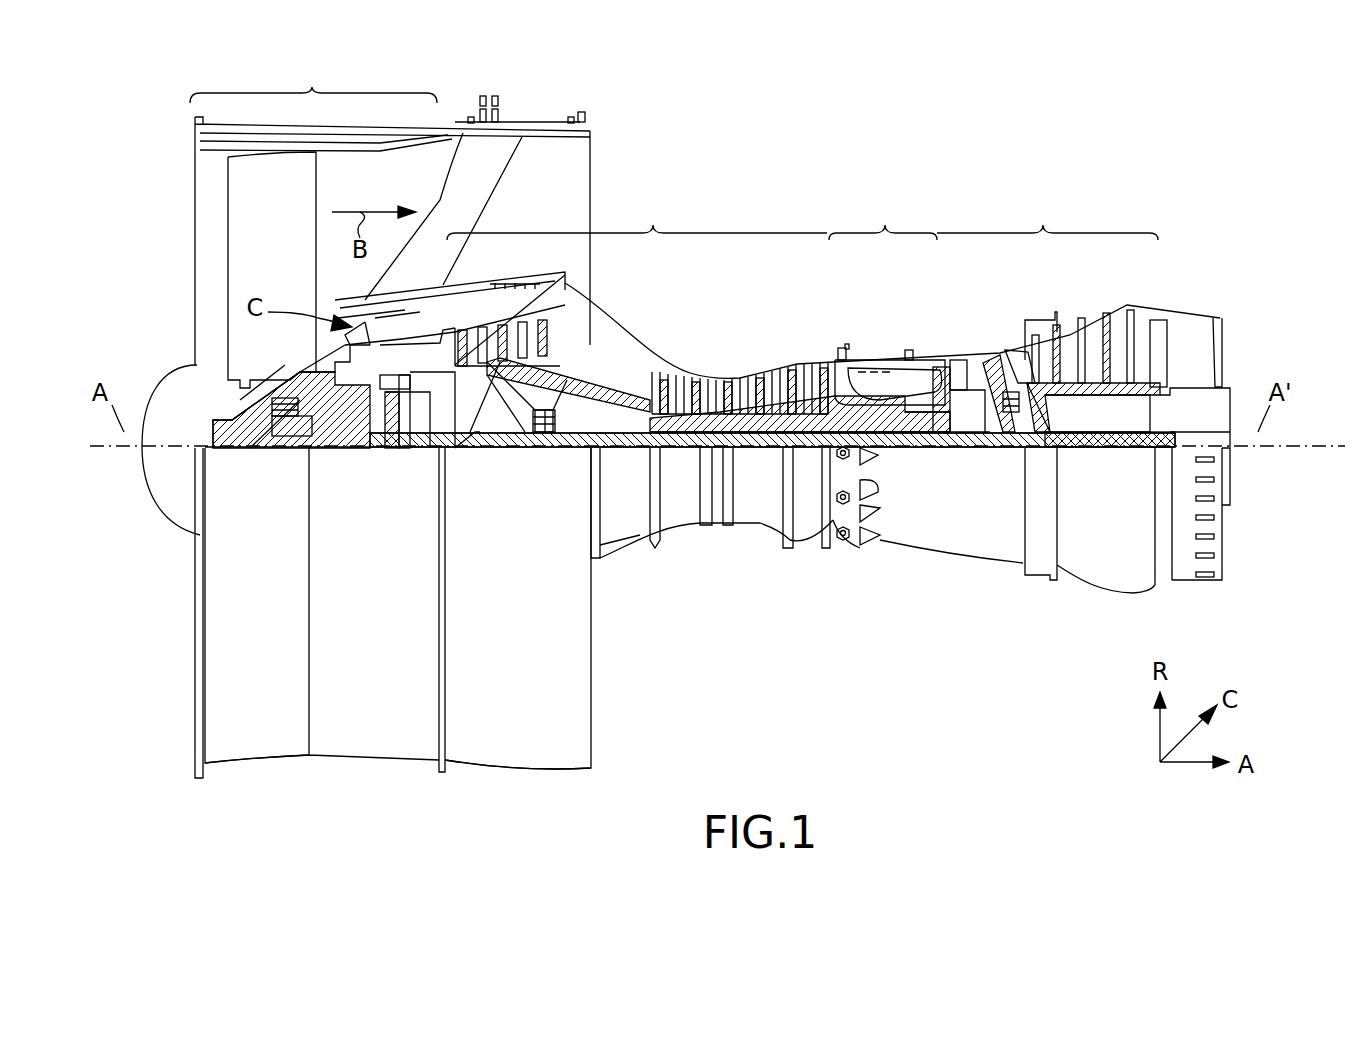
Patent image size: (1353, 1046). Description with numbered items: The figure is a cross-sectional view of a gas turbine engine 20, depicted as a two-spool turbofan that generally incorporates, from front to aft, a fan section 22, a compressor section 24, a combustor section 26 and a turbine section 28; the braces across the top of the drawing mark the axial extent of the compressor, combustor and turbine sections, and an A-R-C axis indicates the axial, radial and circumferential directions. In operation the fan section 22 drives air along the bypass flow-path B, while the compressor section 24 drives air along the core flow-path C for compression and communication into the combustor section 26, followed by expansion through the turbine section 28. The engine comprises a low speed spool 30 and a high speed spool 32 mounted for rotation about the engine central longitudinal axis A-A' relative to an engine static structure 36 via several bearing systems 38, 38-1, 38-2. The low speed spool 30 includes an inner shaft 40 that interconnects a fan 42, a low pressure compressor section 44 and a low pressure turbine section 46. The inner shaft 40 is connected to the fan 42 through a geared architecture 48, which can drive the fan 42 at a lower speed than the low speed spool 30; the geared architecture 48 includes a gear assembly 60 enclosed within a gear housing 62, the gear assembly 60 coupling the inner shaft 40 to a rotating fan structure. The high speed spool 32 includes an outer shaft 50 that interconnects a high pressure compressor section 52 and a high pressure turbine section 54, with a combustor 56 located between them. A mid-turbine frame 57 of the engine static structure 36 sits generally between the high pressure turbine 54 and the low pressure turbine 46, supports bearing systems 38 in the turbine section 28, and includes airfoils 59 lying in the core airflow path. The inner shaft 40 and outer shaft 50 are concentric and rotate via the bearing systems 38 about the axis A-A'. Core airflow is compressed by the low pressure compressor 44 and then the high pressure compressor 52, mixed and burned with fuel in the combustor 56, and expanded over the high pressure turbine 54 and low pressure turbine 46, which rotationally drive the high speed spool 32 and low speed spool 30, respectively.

The gas turbine engine 20 is at (938, 152).
The fan section 22 is at (387, 179).
The compressor section 24 is at (637, 217).
The combustor section 26 is at (883, 217).
The turbine section 28 is at (1047, 217).
The low speed spool 30 is at (766, 468).
The high speed spool 32 is at (805, 412).
The engine static structure 36 is at (372, 740).
The bearing system 38 is at (1000, 437).
The bearing system 38-1 is at (290, 436).
The bearing system 38-2 is at (541, 438).
The inner shaft 40 is at (615, 448).
The fan 42 is at (272, 270).
The low pressure compressor section 44 is at (520, 345).
The low pressure turbine section 46 is at (1093, 330).
The geared architecture 48 is at (403, 462).
The outer shaft 50 is at (878, 430).
The high pressure compressor section 52 is at (740, 412).
The high pressure turbine section 54 is at (953, 362).
The combustor 56 is at (880, 386).
The mid-turbine frame 57 is at (1000, 378).
The airfoils 59 is at (1008, 372).
The gear assembly 60 is at (412, 420).
The gear housing 62 is at (405, 385).